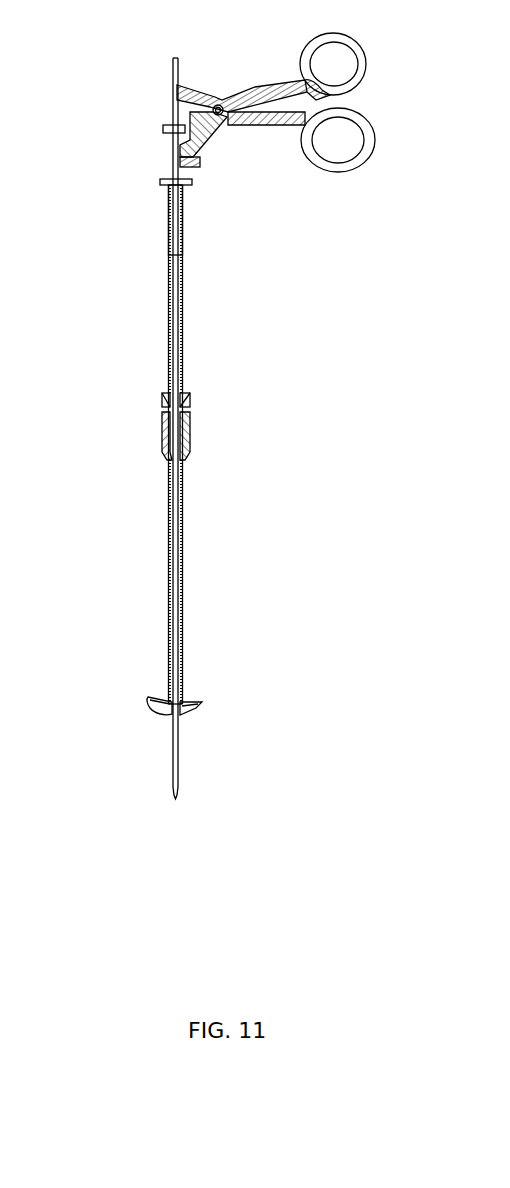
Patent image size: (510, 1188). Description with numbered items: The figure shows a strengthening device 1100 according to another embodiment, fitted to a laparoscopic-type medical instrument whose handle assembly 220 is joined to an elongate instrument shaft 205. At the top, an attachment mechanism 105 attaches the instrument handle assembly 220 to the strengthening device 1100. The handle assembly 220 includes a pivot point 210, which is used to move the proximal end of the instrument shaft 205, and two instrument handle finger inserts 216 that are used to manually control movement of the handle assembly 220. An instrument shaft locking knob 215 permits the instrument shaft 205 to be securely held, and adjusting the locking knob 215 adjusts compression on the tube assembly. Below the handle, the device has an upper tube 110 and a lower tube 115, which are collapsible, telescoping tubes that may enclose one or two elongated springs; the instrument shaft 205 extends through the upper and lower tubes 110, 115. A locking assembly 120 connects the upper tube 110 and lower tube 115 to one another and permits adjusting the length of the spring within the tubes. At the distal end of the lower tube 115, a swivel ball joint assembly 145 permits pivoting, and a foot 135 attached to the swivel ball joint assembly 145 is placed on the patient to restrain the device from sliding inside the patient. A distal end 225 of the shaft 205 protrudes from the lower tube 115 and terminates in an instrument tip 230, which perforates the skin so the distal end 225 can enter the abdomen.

The needle assembly with clamp 1100 is at (140, 80).
The attachment mechanism 105 is at (190, 183).
The upper tube 110 is at (183, 285).
The lower tube 115 is at (182, 595).
The locking assembly 120 is at (190, 435).
The foot 135 is at (197, 715).
The swivel ball joint assembly 145 is at (182, 697).
The instrument shaft 205 is at (170, 90).
The pivot point 210 is at (218, 104).
The instrument shaft locking knob 215 is at (167, 130).
The instrument handle finger inserts 216 is at (343, 138).
The handle assembly 220 is at (230, 120).
The distal end of the shaft 225 is at (182, 743).
The instrument tip 230 is at (170, 790).